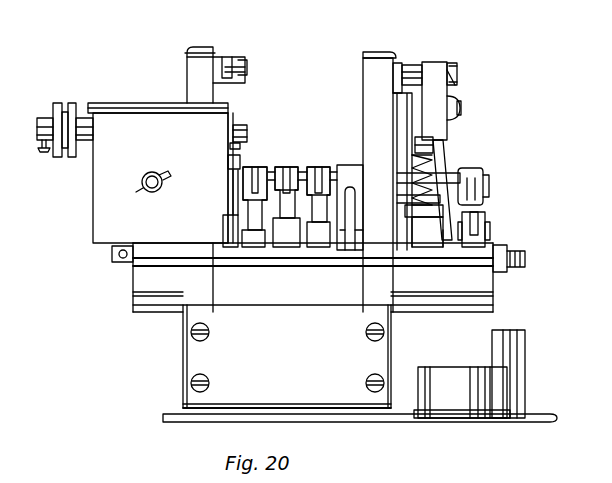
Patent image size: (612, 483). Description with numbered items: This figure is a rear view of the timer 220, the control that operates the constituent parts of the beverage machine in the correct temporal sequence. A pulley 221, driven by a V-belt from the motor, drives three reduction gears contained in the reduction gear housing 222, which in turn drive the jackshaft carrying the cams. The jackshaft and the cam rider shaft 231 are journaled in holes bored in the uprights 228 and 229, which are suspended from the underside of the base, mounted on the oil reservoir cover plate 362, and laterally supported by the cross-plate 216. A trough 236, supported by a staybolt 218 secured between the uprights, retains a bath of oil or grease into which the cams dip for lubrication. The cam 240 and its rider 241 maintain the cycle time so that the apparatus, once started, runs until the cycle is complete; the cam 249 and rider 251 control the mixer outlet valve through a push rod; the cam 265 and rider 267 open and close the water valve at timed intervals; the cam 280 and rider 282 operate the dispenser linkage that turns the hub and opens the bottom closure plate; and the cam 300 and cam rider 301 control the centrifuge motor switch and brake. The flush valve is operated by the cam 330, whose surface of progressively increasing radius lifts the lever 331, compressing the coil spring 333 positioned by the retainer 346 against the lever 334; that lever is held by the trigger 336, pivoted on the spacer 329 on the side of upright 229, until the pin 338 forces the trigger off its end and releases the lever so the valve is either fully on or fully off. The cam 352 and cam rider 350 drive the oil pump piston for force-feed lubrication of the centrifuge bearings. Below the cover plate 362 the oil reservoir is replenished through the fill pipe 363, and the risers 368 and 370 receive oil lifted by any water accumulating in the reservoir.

The cross-plate 216 is at (205, 350).
The staybolt 218 is at (525, 262).
The timer 220 is at (172, 389).
The pulley 221 is at (62, 108).
The reduction gear housing 222 is at (102, 183).
The upright 228 is at (187, 72).
The upright 229 is at (380, 58).
The cam rider shaft 231 is at (305, 172).
The trough 236 is at (135, 270).
The cam 240 is at (318, 250).
The rider 241 is at (340, 173).
The cam 249 is at (262, 250).
The rider 251 is at (264, 173).
The cam 265 is at (360, 238).
The rider 267 is at (348, 168).
The cam 280 is at (232, 240).
The rider 282 is at (232, 163).
The cam 300 is at (298, 250).
The cam rider 301 is at (302, 173).
The spacer 329 is at (405, 68).
The cam 330 is at (425, 240).
The lever 331 is at (455, 212).
The coil spring 333 is at (440, 172).
The lever 334 is at (433, 133).
The trigger 336 is at (440, 90).
The pin 338 is at (445, 240).
The retainer 346 is at (461, 109).
The cam rider 350 is at (472, 168).
The cam 352 is at (487, 232).
The oil reservoir cover plate 362 is at (540, 418).
The fill pipe 363 is at (512, 348).
The riser 368 is at (460, 368).
The riser 370 is at (418, 378).